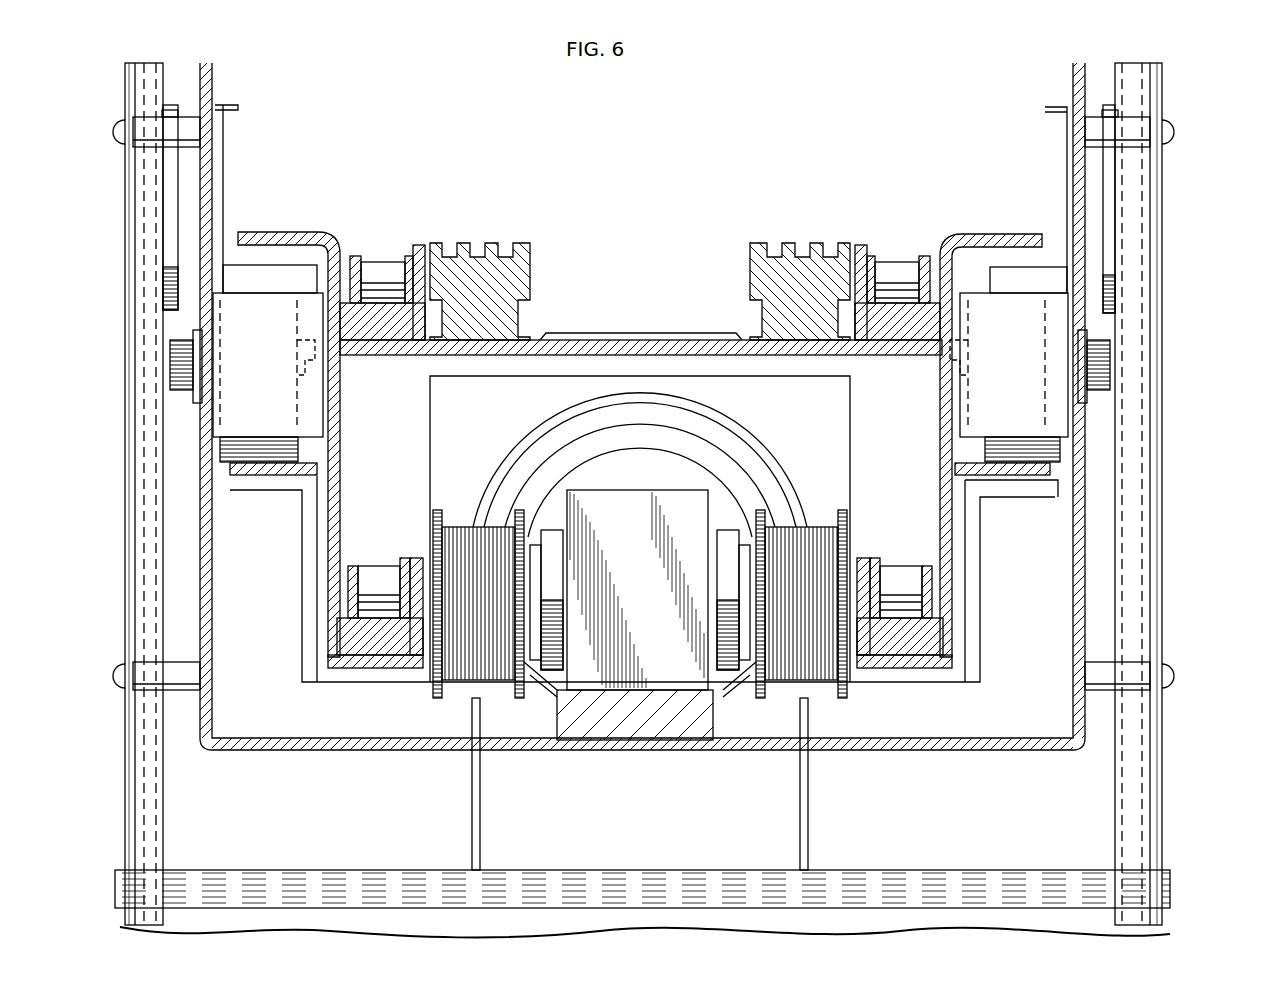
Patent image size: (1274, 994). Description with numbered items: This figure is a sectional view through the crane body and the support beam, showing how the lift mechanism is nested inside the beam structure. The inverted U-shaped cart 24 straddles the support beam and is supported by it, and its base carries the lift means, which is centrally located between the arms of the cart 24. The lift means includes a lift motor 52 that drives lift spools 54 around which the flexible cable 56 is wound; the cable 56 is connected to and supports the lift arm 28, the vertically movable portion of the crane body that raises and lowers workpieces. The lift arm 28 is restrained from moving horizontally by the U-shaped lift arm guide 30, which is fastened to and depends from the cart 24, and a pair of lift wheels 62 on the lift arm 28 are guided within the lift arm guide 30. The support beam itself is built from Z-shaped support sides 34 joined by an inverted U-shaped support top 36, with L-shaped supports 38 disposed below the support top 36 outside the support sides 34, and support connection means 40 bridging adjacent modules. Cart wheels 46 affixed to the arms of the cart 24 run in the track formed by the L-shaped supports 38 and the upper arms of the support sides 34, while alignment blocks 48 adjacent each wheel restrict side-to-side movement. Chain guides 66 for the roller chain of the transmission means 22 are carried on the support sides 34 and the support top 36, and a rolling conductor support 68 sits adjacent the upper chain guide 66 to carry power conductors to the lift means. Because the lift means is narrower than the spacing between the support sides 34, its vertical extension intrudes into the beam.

The transmission means 22 is at (380, 280).
The cart 24 is at (628, 742).
The lift arm 28 is at (158, 470).
The lift arm guide 30 is at (130, 583).
The support sides 34 is at (342, 473).
The support top 36 is at (418, 357).
The L-shaped supports 38 is at (315, 477).
The support connection means 40 is at (620, 338).
The cart wheels 46 is at (248, 275).
The alignment block 48 is at (300, 300).
The lift motor 52 is at (623, 510).
The lift spools 54 is at (450, 510).
The flexible cable 56 is at (471, 812).
The lift wheels 62 is at (140, 240).
The chain guides 66 is at (420, 252).
The rolling conductor support 68 is at (527, 250).